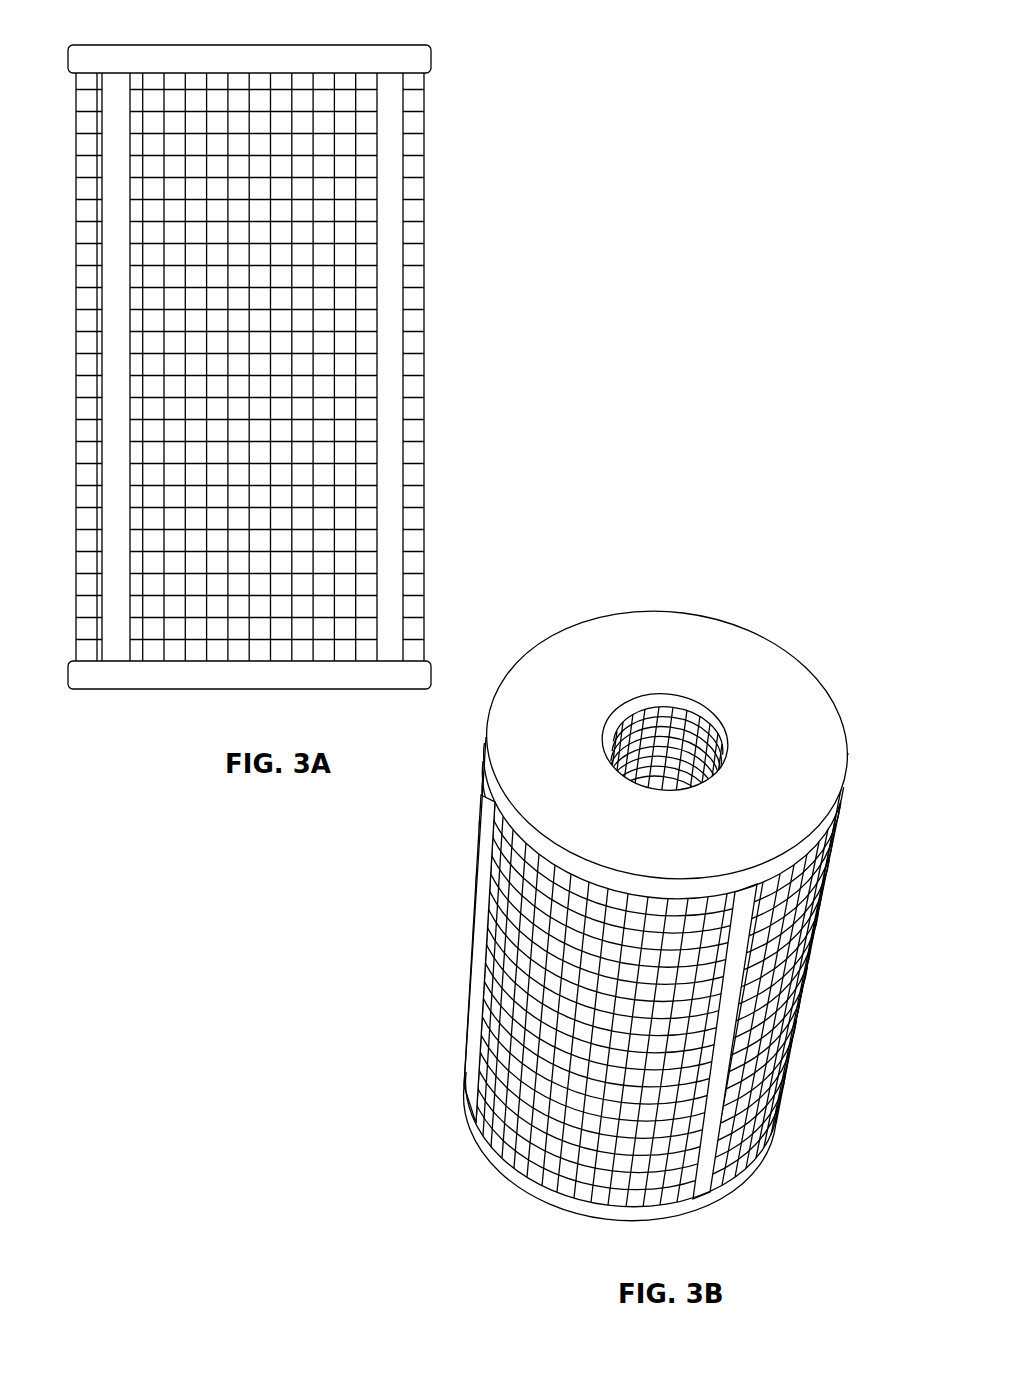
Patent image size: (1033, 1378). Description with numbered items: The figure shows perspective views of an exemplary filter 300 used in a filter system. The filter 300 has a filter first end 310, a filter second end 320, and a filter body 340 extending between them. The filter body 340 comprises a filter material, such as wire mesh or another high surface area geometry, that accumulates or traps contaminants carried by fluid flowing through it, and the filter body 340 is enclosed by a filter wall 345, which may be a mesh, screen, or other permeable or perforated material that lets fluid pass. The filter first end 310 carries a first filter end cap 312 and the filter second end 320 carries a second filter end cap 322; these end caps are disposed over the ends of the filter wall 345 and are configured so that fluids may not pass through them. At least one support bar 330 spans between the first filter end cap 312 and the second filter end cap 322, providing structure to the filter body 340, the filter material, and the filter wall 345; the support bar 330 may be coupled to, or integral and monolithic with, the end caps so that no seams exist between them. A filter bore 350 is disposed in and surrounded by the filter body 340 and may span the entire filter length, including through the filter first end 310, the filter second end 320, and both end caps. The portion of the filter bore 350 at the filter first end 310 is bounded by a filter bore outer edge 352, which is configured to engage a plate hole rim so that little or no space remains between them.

In FIG. 3A, the filter 300 is at (95, 716).
In FIG. 3B, the filter 300 is at (781, 567).
In FIG. 3A, the filter first end 310 is at (390, 38).
In FIG. 3B, the filter first end 310 is at (625, 631).
In FIG. 3A, the first filter end cap 312 is at (418, 62).
In FIG. 3B, the first filter end cap 312 is at (793, 693).
In FIG. 3A, the filter second end 320 is at (265, 698).
In FIG. 3B, the filter second end 320 is at (539, 1210).
In FIG. 3A, the second filter end cap 322 is at (418, 673).
In FIG. 3B, the second filter end cap 322 is at (705, 1195).
In FIG. 3A, the support bar 330 is at (120, 354).
In FIG. 3B, the support bar 330 is at (483, 937).
In FIG. 3A, the filter body 340 is at (439, 317).
In FIG. 3B, the filter body 340 is at (807, 1040).
In FIG. 3A, the filter wall 345 is at (304, 258).
In FIG. 3B, the filter wall 345 is at (519, 881).
In FIG. 3B, the filter bore 350 is at (679, 685).
In FIG. 3B, the filter bore outer edge 352 is at (647, 693).